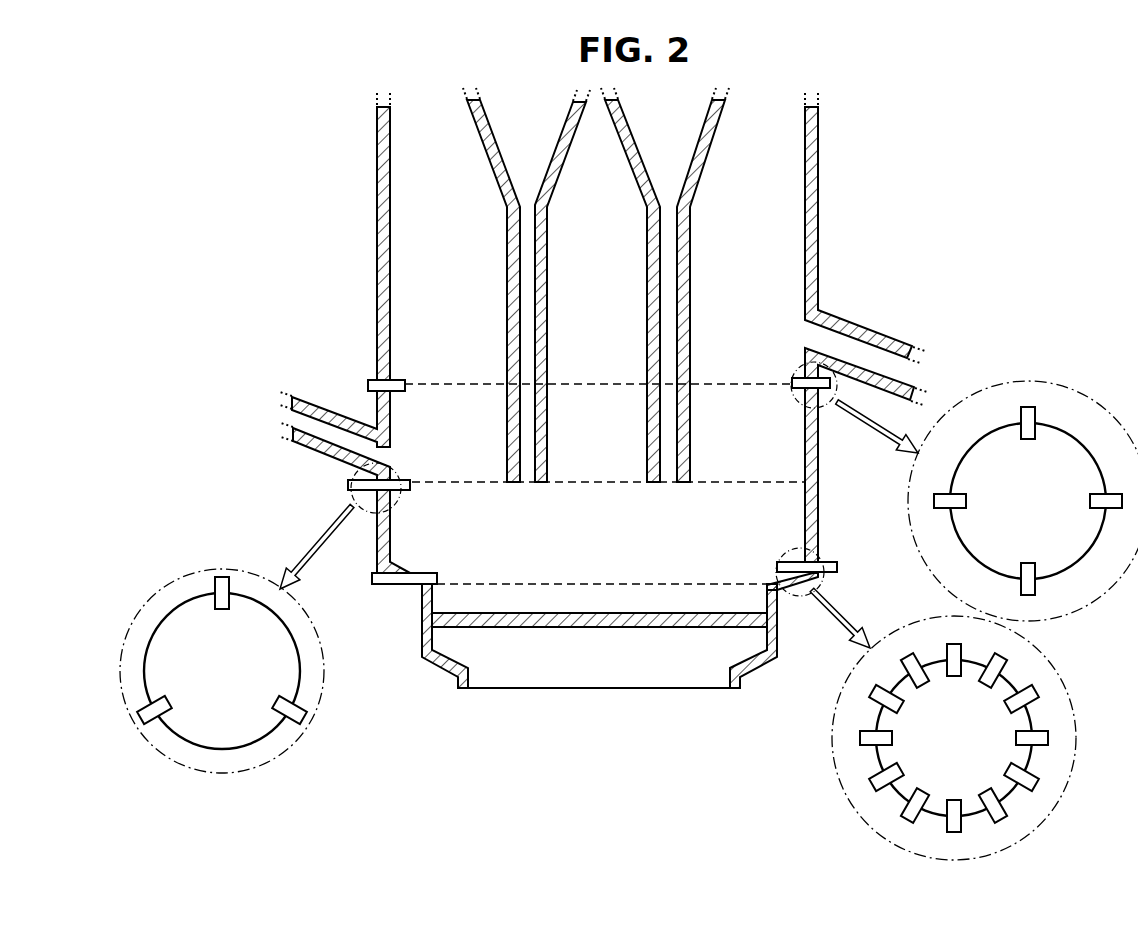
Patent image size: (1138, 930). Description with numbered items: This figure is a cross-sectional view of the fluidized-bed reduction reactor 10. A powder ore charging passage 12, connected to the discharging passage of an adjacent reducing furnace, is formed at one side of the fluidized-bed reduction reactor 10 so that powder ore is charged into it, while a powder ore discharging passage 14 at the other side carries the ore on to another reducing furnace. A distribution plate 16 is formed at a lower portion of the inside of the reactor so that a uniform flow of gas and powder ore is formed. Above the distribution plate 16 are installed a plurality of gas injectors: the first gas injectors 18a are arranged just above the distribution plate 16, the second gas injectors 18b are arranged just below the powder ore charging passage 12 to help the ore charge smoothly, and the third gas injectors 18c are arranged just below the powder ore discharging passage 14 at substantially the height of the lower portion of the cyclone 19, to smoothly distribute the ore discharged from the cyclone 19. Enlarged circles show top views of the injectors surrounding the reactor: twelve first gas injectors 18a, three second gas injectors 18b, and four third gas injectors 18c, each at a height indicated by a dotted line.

The fluidized-bed reduction reactor 10 is at (265, 147).
The powder ore charging passage 12 is at (338, 420).
The powder ore discharging passage 14 is at (850, 336).
The distribution plate 16 is at (598, 628).
The first gas injectors 18a is at (392, 588).
The second gas injectors 18b is at (358, 500).
The third gas injectors 18c is at (820, 395).
The cyclone 19 is at (705, 152).